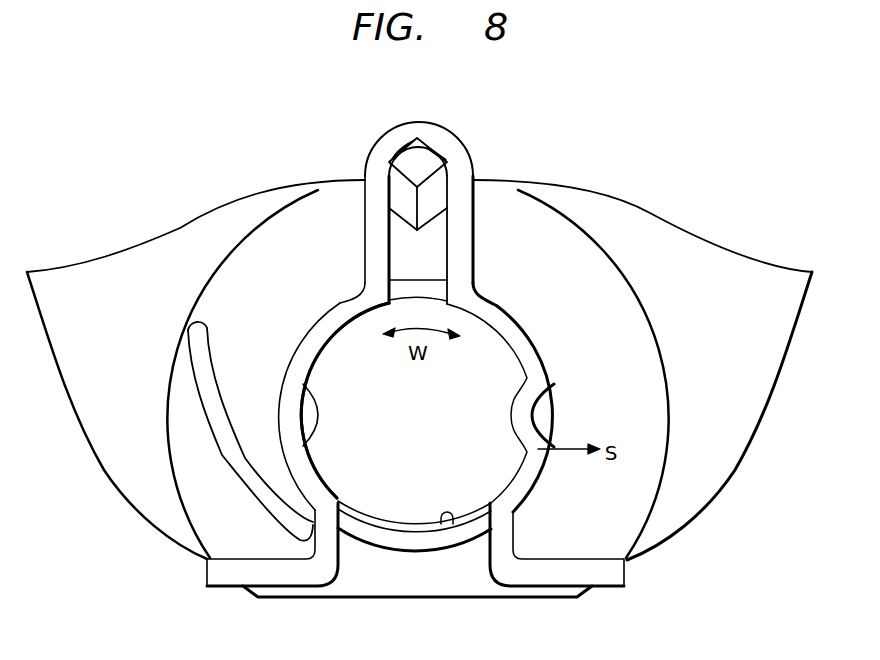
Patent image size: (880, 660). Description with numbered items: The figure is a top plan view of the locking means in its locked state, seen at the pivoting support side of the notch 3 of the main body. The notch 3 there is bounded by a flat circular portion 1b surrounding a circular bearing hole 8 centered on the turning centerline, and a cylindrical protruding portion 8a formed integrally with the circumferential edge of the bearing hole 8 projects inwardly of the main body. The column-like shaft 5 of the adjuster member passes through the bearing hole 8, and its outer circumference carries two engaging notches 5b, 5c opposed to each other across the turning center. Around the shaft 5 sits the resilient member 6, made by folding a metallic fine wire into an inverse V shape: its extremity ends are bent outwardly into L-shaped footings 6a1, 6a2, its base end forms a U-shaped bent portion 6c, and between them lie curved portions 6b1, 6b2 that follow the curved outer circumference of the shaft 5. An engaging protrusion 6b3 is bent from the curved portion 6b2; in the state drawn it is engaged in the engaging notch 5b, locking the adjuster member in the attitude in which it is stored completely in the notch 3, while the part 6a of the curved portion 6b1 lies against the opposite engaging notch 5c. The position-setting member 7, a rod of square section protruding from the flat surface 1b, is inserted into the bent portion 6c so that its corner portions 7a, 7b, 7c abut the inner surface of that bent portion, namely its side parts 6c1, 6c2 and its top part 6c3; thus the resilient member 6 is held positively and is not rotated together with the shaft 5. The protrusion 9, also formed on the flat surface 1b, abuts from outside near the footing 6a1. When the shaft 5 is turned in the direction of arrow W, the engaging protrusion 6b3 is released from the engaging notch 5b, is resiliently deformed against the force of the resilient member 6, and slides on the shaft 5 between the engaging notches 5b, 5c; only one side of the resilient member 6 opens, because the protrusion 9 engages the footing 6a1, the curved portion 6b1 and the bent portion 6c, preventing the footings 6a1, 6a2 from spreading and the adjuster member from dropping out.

The flat surface (circular portion) 1b is at (652, 344).
The notch 3 is at (783, 323).
The shaft 5 is at (429, 403).
The engaging notch 5b is at (510, 428).
The engaging notch 5c is at (315, 428).
The resilient member 6 is at (421, 351).
The clip projection 6a is at (313, 404).
The L-shaped footing 6a1 is at (277, 576).
The L-shaped footing 6a2 is at (562, 577).
The curved portion 6b1 is at (322, 320).
The curved portion 6b2 is at (527, 482).
The engaging protrusion 6b3 is at (540, 413).
The U-shaped bent portion 6c is at (402, 184).
The left arm side 6c1 is at (370, 250).
The right arm side 6c2 is at (464, 229).
The arm top portion 6c3 is at (440, 130).
The position-setting member 7 is at (416, 145).
The corner portion 7a is at (417, 140).
The corner portion 7b is at (387, 158).
The corner portion 7c is at (447, 162).
The bearing hole 8 is at (450, 525).
The cylindrical protruding portion 8a is at (385, 540).
The protrusion 9 is at (200, 375).